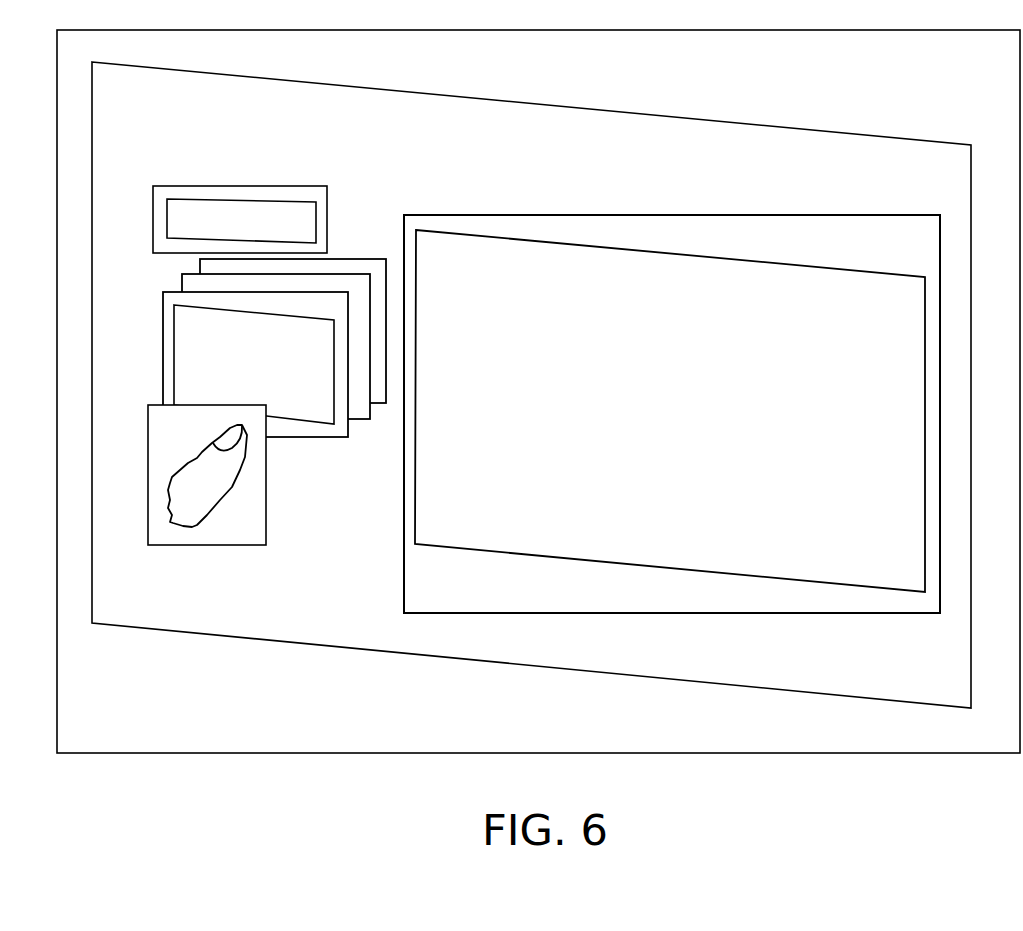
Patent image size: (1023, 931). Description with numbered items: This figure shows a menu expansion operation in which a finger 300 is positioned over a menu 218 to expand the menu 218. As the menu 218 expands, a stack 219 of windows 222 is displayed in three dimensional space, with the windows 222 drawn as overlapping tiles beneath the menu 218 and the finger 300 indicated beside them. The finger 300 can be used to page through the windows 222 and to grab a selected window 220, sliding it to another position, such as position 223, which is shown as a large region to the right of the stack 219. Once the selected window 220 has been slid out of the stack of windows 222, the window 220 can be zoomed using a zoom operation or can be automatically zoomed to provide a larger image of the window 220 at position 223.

The menu 218 is at (300, 197).
The stack 219 is at (394, 205).
The selected window 220 is at (662, 227).
The windows 222 is at (350, 267).
The position 223 is at (663, 384).
The finger 300 is at (245, 522).